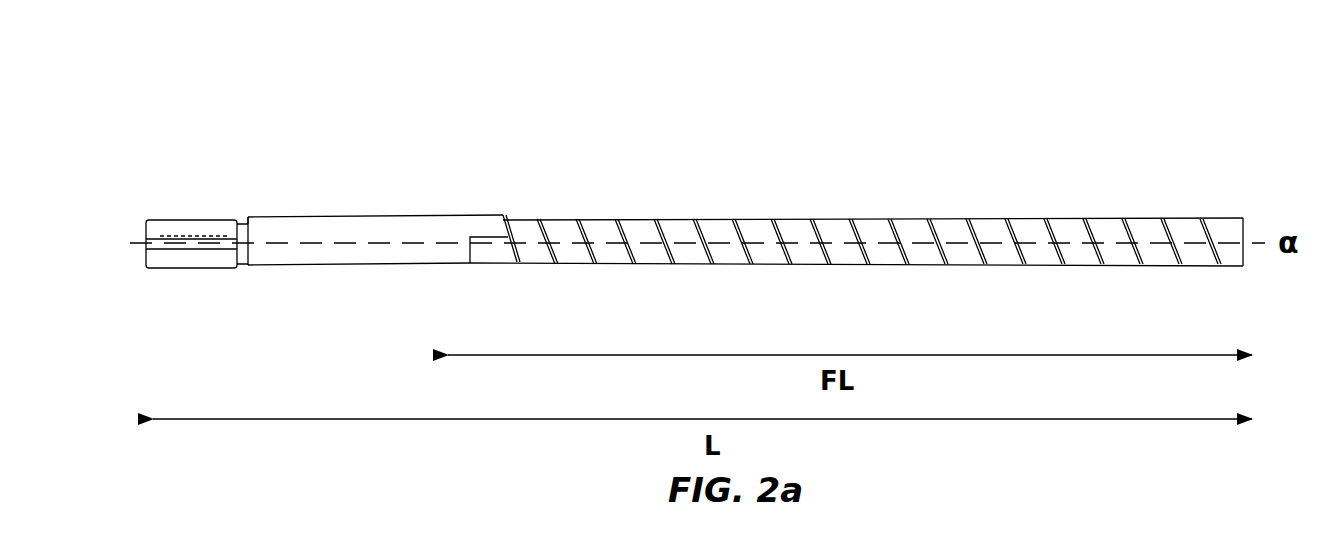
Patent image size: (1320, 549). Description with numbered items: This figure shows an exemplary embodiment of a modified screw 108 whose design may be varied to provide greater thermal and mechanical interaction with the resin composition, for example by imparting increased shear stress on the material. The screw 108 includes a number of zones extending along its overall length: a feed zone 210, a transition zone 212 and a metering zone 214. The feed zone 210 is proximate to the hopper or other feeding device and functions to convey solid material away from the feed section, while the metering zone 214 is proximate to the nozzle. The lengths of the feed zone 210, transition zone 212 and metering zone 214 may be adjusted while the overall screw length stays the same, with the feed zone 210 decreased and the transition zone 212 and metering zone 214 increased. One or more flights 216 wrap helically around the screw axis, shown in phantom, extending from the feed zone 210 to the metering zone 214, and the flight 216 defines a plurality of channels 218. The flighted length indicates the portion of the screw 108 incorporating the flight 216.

The screw 108 is at (490, 56).
The feed zone 210 is at (715, 200).
The transition zone 212 is at (970, 200).
The metering zone 214 is at (1225, 200).
The flight 216 is at (520, 263).
The channels 218 is at (650, 263).